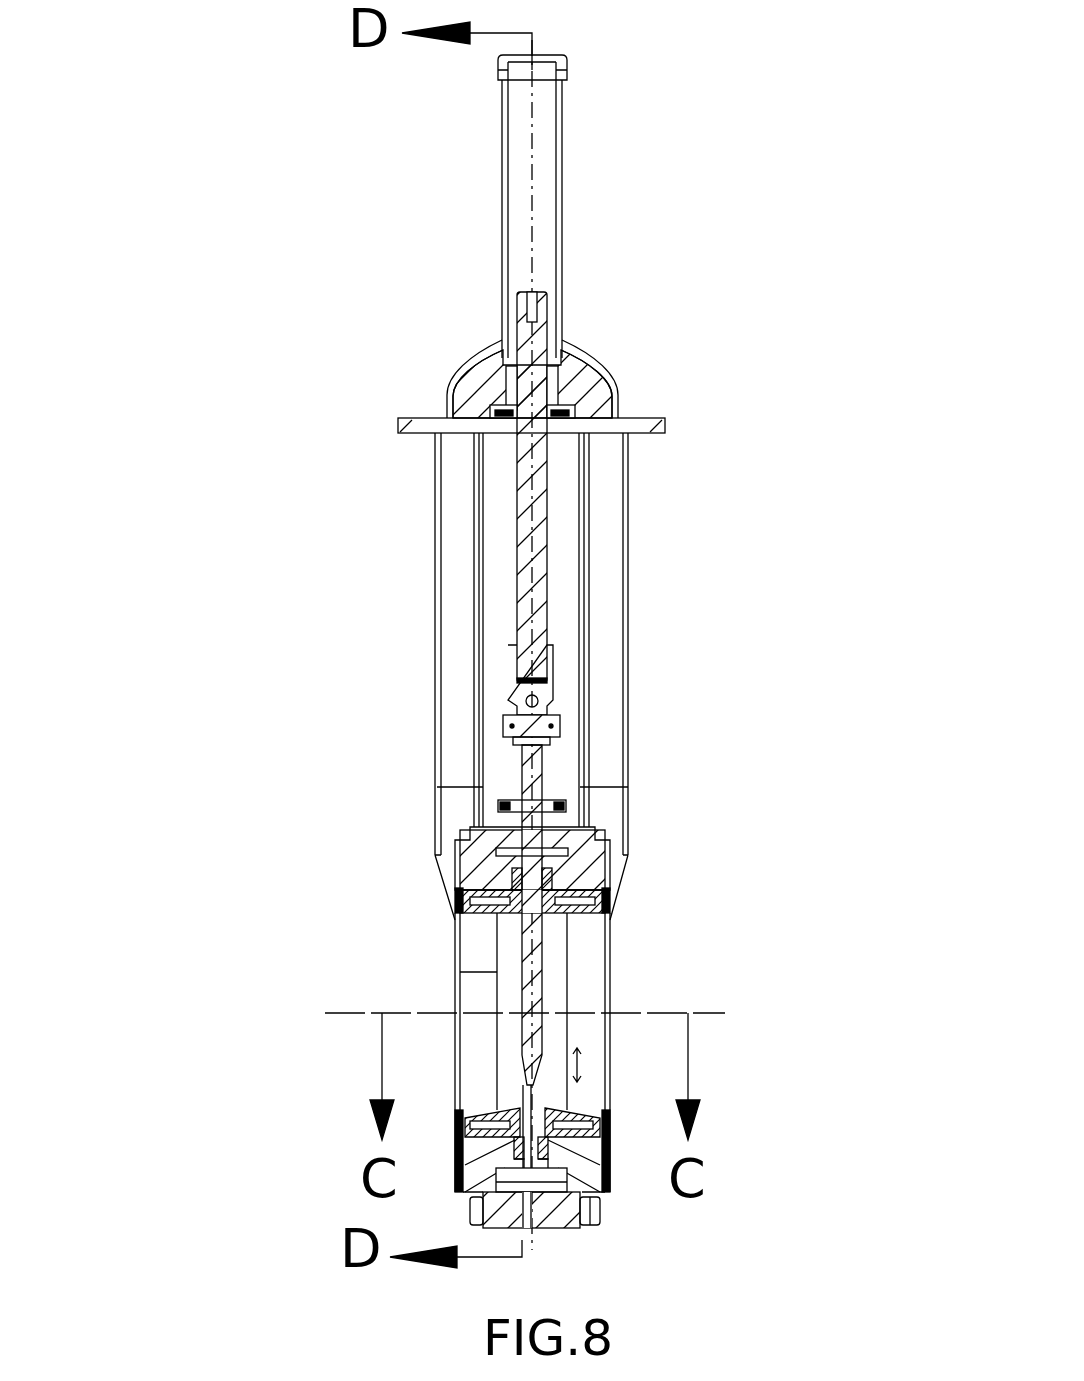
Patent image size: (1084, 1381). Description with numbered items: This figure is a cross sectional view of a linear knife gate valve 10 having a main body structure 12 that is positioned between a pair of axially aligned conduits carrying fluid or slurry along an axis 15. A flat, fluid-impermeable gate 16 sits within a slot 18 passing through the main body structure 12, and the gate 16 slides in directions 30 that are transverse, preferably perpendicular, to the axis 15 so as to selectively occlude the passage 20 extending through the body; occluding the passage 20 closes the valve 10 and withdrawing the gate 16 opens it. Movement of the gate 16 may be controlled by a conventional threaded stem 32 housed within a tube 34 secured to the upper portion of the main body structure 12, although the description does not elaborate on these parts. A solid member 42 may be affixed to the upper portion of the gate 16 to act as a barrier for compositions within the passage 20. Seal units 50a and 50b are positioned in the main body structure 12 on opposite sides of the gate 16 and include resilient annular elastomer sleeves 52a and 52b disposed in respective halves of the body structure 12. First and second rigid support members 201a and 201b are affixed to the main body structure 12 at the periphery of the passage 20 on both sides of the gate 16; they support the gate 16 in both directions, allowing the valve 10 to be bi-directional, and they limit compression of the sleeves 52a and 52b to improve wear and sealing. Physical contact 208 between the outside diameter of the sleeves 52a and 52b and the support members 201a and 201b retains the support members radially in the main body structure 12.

The linear gate valve 10 is at (282, 969).
The main body structure 12 is at (565, 1222).
The axis 15 is at (672, 1011).
The gate 16 is at (590, 860).
The slot 18 is at (567, 830).
The passage 20 is at (479, 955).
The directions 30 is at (590, 1051).
The actuating rod 32 is at (565, 422).
The tube 34 is at (560, 118).
The solid member 42 is at (548, 795).
The seal unit 50a is at (453, 922).
The seal unit 50b is at (615, 915).
The elastomer sleeve 52a is at (490, 1118).
The elastomer sleeve 52b is at (590, 1120).
The first rigid support member 201a is at (510, 1152).
The second rigid support member 201b is at (560, 1153).
The physical contact 208 is at (518, 1113).